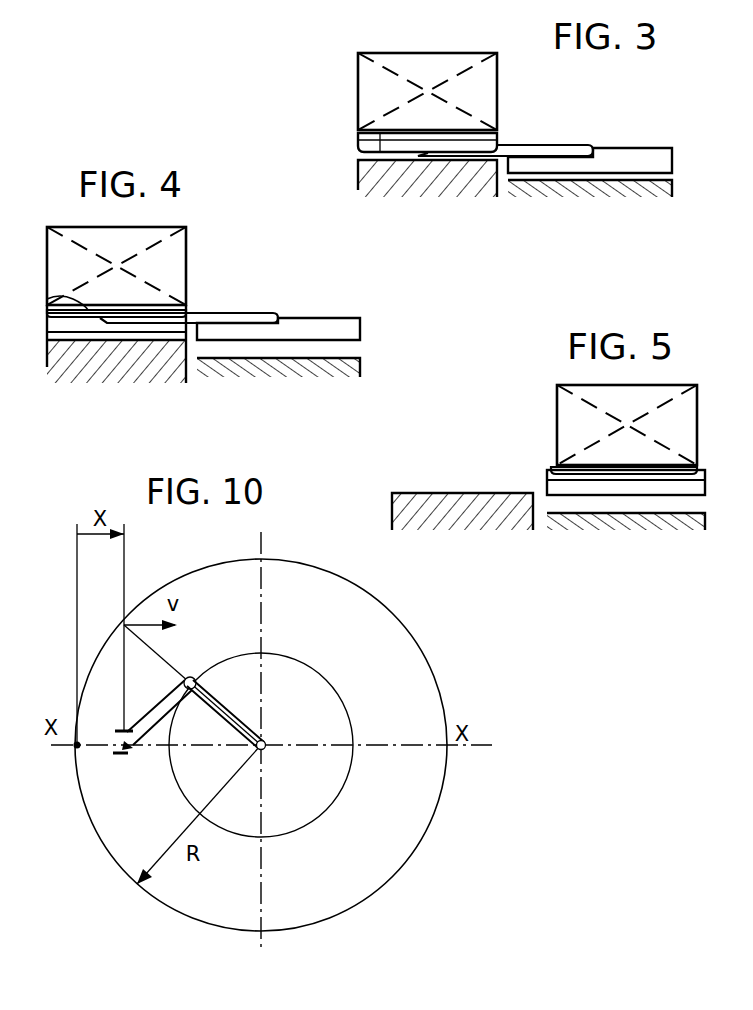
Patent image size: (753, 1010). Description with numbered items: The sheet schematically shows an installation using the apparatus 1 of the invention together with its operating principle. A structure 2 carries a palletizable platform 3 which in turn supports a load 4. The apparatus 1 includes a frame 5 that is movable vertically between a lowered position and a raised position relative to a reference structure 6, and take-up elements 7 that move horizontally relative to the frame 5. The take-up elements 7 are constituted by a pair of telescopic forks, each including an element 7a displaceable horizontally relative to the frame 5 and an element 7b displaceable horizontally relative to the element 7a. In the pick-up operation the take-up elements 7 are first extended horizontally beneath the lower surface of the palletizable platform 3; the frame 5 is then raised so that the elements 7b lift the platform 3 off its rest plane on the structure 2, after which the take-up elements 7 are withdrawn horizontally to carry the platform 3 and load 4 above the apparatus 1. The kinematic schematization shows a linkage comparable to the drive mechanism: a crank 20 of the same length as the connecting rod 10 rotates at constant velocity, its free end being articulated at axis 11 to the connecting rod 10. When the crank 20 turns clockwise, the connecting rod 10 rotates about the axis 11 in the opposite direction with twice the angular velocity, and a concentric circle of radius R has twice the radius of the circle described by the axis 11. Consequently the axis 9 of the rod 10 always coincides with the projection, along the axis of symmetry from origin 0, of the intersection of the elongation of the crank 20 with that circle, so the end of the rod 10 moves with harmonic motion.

In FIG. 4, the apparatus 1 is at (302, 307).
In FIG. 5, the apparatus 1 is at (717, 467).
In FIG. 3, the structure 2 is at (408, 172).
In FIG. 4, the structure 2 is at (47, 352).
In FIG. 5, the structure 2 is at (440, 507).
In FIG. 3, the palletizable platform 3 is at (358, 151).
In FIG. 4, the palletizable platform 3 is at (55, 324).
In FIG. 5, the palletizable platform 3 is at (557, 467).
In FIG. 3, the load 4 is at (490, 76).
In FIG. 4, the load 4 is at (188, 243).
In FIG. 5, the load 4 is at (568, 408).
In FIG. 3, the frame 5 is at (648, 158).
In FIG. 4, the frame 5 is at (353, 325).
In FIG. 5, the frame 5 is at (665, 488).
In FIG. 3, the reference structure 6 is at (643, 183).
In FIG. 4, the reference structure 6 is at (353, 365).
In FIG. 5, the reference structure 6 is at (633, 520).
In FIG. 3, the take-up elements 7 is at (583, 138).
In FIG. 4, the take-up elements 7 is at (162, 322).
In FIG. 5, the take-up elements 7 is at (603, 474).
In FIG. 3, the element of telescopic fork 7a is at (543, 147).
In FIG. 4, the element of telescopic fork 7a is at (250, 317).
In FIG. 3, the element of telescopic fork 7b is at (380, 150).
In FIG. 4, the element of telescopic fork 7b is at (47, 297).
In FIG. 10, the axis of the rod 9 is at (128, 754).
In FIG. 10, the connecting rod 10 is at (157, 715).
In FIG. 10, the axis 11 is at (192, 677).
In FIG. 10, the crank 20 is at (240, 709).
In FIG. 10, the origin point 0 is at (77, 750).